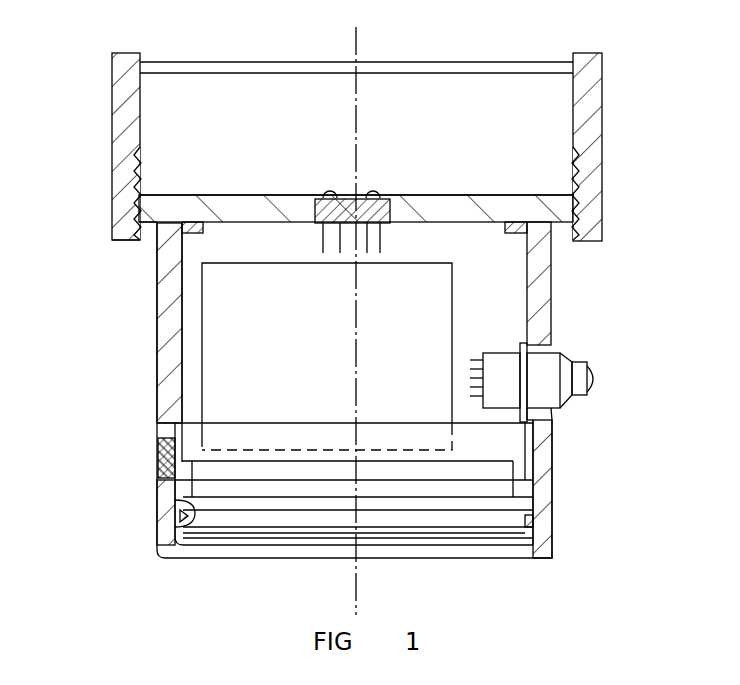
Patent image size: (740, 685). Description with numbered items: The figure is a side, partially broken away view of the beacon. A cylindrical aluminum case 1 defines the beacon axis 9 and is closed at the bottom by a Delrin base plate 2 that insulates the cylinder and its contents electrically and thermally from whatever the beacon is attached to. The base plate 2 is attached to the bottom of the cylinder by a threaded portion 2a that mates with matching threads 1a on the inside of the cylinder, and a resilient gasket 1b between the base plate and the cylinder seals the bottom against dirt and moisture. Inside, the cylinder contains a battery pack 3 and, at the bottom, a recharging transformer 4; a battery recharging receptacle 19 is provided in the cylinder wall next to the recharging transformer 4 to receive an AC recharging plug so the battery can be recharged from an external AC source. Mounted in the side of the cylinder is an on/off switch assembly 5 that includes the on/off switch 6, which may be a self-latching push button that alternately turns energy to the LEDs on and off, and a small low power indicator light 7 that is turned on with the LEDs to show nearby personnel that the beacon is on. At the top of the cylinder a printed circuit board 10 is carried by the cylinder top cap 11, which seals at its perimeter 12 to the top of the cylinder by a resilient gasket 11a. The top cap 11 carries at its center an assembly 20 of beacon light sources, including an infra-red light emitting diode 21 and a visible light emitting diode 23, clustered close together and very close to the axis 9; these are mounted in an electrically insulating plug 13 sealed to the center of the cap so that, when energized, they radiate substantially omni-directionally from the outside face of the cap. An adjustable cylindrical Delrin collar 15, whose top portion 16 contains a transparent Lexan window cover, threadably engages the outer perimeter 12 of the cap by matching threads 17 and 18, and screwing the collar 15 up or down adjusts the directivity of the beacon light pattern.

The cylindrical aluminum case 1 is at (364, 390).
The matching threads 1a is at (158, 547).
The resilient gasket 1b is at (187, 503).
The base plate 2 is at (470, 559).
The threaded portion 2a is at (517, 533).
The battery pack 3 is at (210, 388).
The recharging transformer 4 is at (225, 497).
The on/off switch assembly 5 is at (562, 366).
The on/off switch 6 is at (490, 353).
The indicator light 7 is at (598, 380).
The beacon axis 9 is at (357, 36).
The printed circuit board 10 is at (569, 283).
The top cap 11 is at (498, 195).
The resilient gasket 11a is at (195, 222).
The perimeter of the cap 12 is at (186, 222).
The electrically insulating plug 13 is at (356, 161).
The collar 15 is at (112, 93).
The cover top panel 16 is at (460, 62).
The matching threads 17 is at (140, 153).
The matching threads 18 is at (600, 210).
The battery recharging receptacle 19 is at (158, 457).
The assembly of beacon light sources 20 is at (368, 177).
The infra-red light emitting diode 21 is at (381, 195).
The visible light emitting diode 23 is at (325, 192).